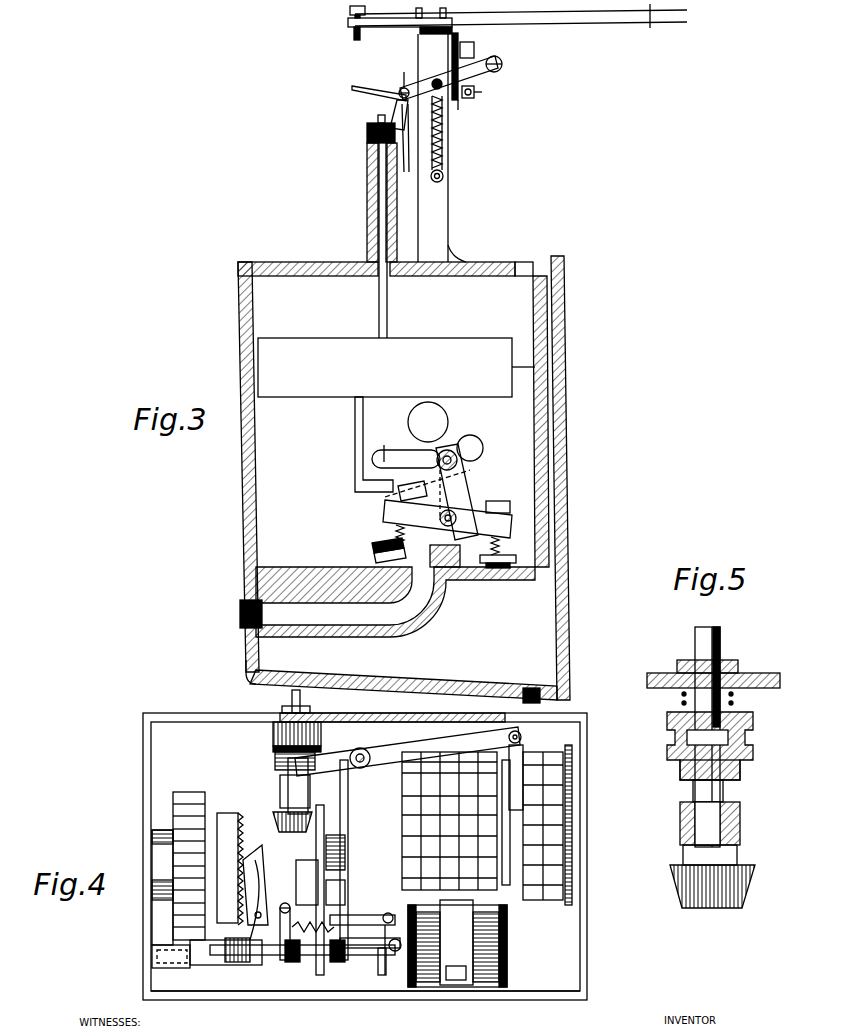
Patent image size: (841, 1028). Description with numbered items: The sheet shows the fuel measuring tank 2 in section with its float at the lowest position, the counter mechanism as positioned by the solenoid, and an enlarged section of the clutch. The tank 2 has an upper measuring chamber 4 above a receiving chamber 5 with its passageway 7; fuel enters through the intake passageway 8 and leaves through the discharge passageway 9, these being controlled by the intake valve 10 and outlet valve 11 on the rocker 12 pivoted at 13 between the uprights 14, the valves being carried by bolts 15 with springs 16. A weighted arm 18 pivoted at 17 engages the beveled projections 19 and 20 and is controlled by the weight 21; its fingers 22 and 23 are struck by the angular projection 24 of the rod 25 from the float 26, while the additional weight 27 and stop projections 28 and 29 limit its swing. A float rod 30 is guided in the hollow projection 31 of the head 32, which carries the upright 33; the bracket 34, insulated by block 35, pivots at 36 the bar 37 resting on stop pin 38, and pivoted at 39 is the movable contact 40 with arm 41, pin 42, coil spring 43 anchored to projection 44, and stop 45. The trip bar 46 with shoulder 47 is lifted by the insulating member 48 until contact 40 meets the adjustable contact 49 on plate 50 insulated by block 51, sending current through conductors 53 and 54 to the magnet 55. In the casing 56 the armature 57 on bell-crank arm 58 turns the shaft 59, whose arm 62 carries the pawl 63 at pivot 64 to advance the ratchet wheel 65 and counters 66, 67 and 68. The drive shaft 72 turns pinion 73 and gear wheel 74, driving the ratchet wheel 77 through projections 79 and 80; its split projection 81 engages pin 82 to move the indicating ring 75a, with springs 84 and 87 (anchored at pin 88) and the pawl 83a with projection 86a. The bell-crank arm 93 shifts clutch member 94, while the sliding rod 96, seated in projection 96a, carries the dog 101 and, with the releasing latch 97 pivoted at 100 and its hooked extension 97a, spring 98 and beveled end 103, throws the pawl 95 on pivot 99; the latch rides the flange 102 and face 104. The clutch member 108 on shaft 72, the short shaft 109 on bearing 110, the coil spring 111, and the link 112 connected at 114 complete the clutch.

In FIG. 3, the measuring or controlling tank 2 is at (549, 480).
In FIG. 3, the fuel controlling or measuring chamber 4 is at (269, 467).
In FIG. 3, the receiving or overflow chamber 5 is at (401, 664).
In FIG. 3, the passageway 7 is at (566, 430).
In FIG. 3, the intake passageway 8 is at (387, 602).
In FIG. 3, the discharge passageway 9 is at (506, 568).
In FIG. 3, the intake valve 10 is at (374, 552).
In FIG. 3, the outlet valve 11 is at (516, 559).
In FIG. 3, the rocker 12 is at (510, 528).
In FIG. 3, the pivot 13 is at (404, 540).
In FIG. 3, the uprights 14 is at (464, 552).
In FIG. 3, the bolts 15 is at (510, 507).
In FIG. 3, the springs 16 is at (380, 530).
In FIG. 3, the pivot 17 is at (452, 445).
In FIG. 3, the weighted arm 18 is at (468, 478).
In FIG. 3, the beveled projection 19 is at (412, 486).
In FIG. 3, the beveled projection 20 is at (458, 512).
In FIG. 3, the weight 21 is at (428, 422).
In FIG. 3, the upper finger 22 is at (375, 444).
In FIG. 3, the lower finger 23 is at (385, 497).
In FIG. 3, the angular projection 24 is at (355, 470).
In FIG. 3, the rod 25 is at (357, 420).
In FIG. 3, the float 26 is at (396, 367).
In FIG. 3, the additional weight 27 is at (480, 440).
In FIG. 3, the stop projection 28 is at (458, 458).
In FIG. 3, the stop projection 29 is at (406, 456).
In FIG. 3, the float rod 30 is at (387, 308).
In FIG. 3, the hollow projection 31 is at (367, 210).
In FIG. 3, the head 32 is at (287, 268).
In FIG. 3, the upright 33 is at (437, 216).
In FIG. 3, the bracket 34 is at (478, 66).
In FIG. 3, the insulating block 35 is at (458, 105).
In FIG. 3, the pivot 36 is at (502, 64).
In FIG. 3, the bar 37 is at (474, 88).
In FIG. 3, the stop pin 38 is at (480, 94).
In FIG. 3, the pivot 39 is at (397, 80).
In FIG. 3, the movable contact 40 is at (418, 27).
In FIG. 3, the arm 41 is at (430, 80).
In FIG. 3, the pin 42 is at (438, 80).
In FIG. 3, the coil spring 43 is at (443, 138).
In FIG. 3, the projection 44 is at (444, 175).
In FIG. 3, the stop 45 is at (408, 145).
In FIG. 3, the trip bar 46 is at (352, 88).
In FIG. 3, the shoulder 47 is at (392, 112).
In FIG. 3, the insulating member 48 is at (367, 138).
In FIG. 3, the adjustable contact 49 is at (354, 33).
In FIG. 3, the plate 50 is at (348, 22).
In FIG. 3, the block 51 is at (455, 40).
In FIG. 3, the conductor 53 is at (651, 24).
In FIG. 3, the conductor 54 is at (612, 24).
In FIG. 4, the magnet 55 is at (492, 935).
In FIG. 4, the register mechanism casing 56 is at (525, 996).
In FIG. 4, the armature 57 is at (393, 975).
In FIG. 4, the bell-crank arm 58 is at (345, 880).
In FIG. 4, the shaft 59 is at (295, 791).
In FIG. 4, the arm 62 is at (431, 752).
In FIG. 4, the pawl 63 is at (572, 748).
In FIG. 4, the pivot 64 is at (522, 738).
In FIG. 4, the ratchet wheel 65 is at (524, 895).
In FIG. 4, the adding counter 66 is at (472, 846).
In FIG. 4, the counter wheel 67 is at (540, 900).
In FIG. 4, the subtracting counter 68 is at (556, 900).
In FIG. 4, the drive shaft 72 is at (300, 703).
In FIG. 5, the drive shaft 72 is at (722, 640).
In FIG. 4, the pinion 73 is at (280, 812).
In FIG. 5, the pinion 73 is at (752, 880).
In FIG. 4, the gear wheel 74 is at (286, 824).
In FIG. 4, the indicating ring 75a is at (275, 748).
In FIG. 4, the ratchet wheel 77 is at (228, 813).
In FIG. 4, the projection 79 is at (283, 931).
In FIG. 4, the projection 80 is at (313, 918).
In FIG. 4, the split projection 81 is at (243, 885).
In FIG. 4, the pin 82 is at (207, 958).
In FIG. 4, the pawl 83a is at (240, 965).
In FIG. 4, the coil spring 84 is at (172, 835).
In FIG. 4, the lateral projection 86a is at (244, 965).
In FIG. 4, the coil spring 87 is at (345, 845).
In FIG. 4, the pin 88 is at (302, 879).
In FIG. 4, the bell-crank arm 93 is at (310, 760).
In FIG. 4, the clutch member 94 is at (275, 758).
In FIG. 5, the clutch member 94 is at (740, 775).
In FIG. 4, the pawl 95 is at (261, 893).
In FIG. 4, the sliding rod 96 is at (275, 962).
In FIG. 4, the projection 96a is at (175, 966).
In FIG. 4, the releasing latch 97 is at (370, 959).
In FIG. 4, the hooked extension 97a is at (340, 960).
In FIG. 4, the spring 98 is at (318, 960).
In FIG. 4, the pivot 99 is at (265, 962).
In FIG. 4, the pivotal connection 100 is at (388, 913).
In FIG. 4, the dog 101 is at (236, 966).
In FIG. 4, the peripheral flange 102 is at (449, 821).
In FIG. 4, the beveled end 103 is at (362, 942).
In FIG. 4, the face 104 is at (324, 820).
In FIG. 4, the clutch member 108 is at (276, 732).
In FIG. 5, the clutch member 108 is at (754, 720).
In FIG. 5, the short shaft 109 is at (710, 795).
In FIG. 4, the bearing 110 is at (344, 790).
In FIG. 5, the bearing 110 is at (740, 831).
In FIG. 4, the coil spring 111 is at (350, 716).
In FIG. 5, the coil spring 111 is at (683, 697).
In FIG. 4, the link 112 is at (371, 758).
In FIG. 4, the pivotal connection 114 is at (420, 846).